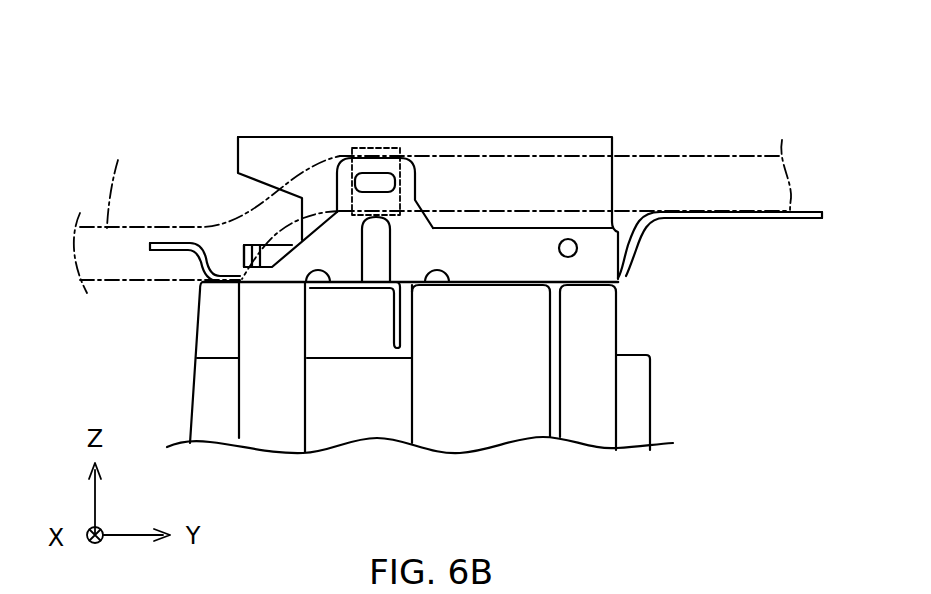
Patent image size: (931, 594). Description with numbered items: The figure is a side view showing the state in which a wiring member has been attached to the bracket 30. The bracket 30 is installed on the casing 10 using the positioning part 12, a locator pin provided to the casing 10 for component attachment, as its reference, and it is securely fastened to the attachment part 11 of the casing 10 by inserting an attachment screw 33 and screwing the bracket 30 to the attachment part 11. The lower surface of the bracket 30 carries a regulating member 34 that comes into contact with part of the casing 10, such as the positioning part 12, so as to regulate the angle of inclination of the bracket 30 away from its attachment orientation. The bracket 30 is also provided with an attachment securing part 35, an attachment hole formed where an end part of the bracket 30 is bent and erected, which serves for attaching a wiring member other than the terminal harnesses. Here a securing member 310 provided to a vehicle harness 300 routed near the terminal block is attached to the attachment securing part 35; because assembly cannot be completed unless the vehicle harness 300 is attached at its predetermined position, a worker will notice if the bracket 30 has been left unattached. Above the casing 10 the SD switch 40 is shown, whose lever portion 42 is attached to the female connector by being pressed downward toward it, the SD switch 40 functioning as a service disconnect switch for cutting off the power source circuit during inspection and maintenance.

The vehicle harness 300 is at (118, 160).
The lever portion 42 is at (438, 148).
The SD switch 40 is at (566, 136).
The attachment screw 33 is at (262, 244).
The attachment securing part 35 is at (396, 183).
The securing member 310 is at (380, 150).
The bracket 30 is at (721, 208).
The regulating member 34 is at (398, 313).
The attachment part 11 is at (617, 348).
The positioning part 12 is at (460, 405).
The casing 10 is at (651, 422).